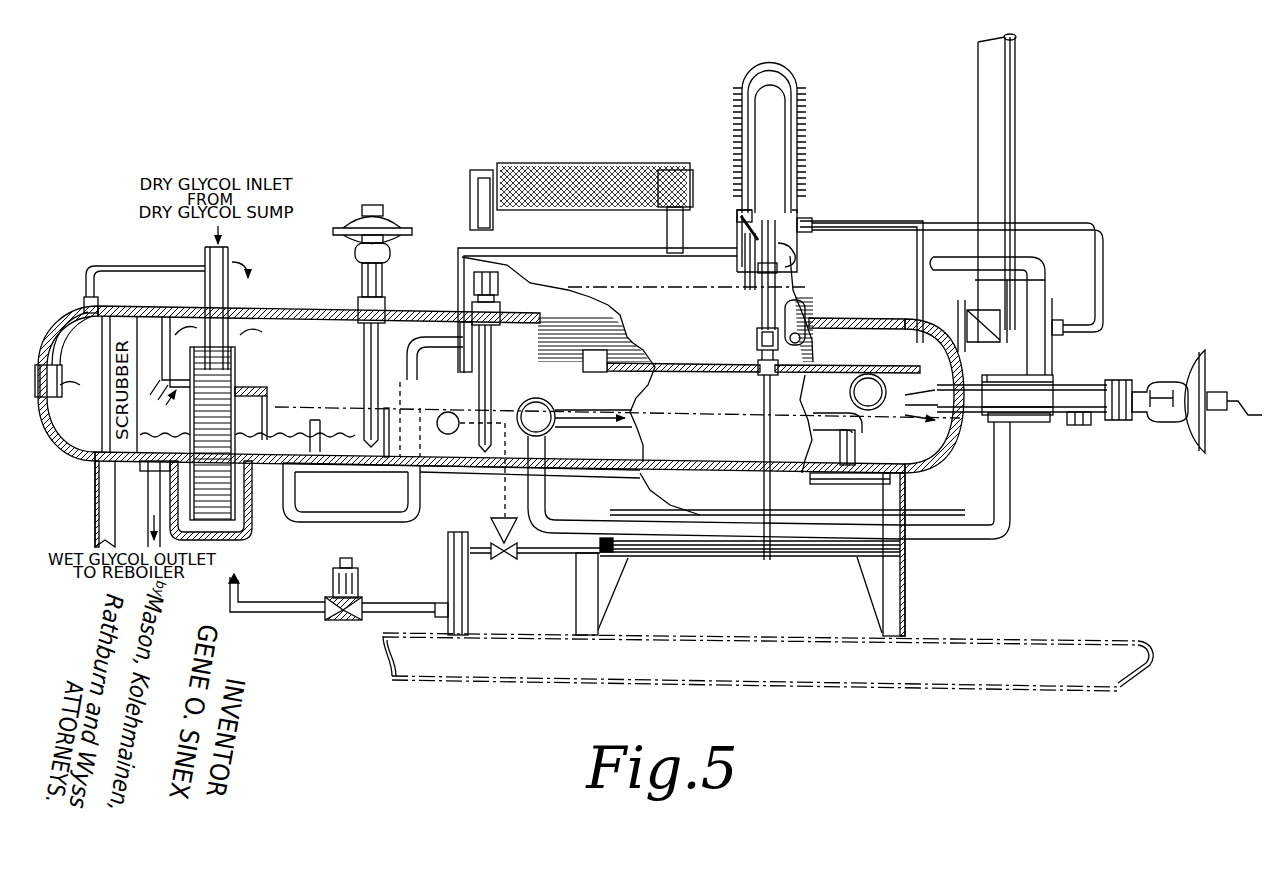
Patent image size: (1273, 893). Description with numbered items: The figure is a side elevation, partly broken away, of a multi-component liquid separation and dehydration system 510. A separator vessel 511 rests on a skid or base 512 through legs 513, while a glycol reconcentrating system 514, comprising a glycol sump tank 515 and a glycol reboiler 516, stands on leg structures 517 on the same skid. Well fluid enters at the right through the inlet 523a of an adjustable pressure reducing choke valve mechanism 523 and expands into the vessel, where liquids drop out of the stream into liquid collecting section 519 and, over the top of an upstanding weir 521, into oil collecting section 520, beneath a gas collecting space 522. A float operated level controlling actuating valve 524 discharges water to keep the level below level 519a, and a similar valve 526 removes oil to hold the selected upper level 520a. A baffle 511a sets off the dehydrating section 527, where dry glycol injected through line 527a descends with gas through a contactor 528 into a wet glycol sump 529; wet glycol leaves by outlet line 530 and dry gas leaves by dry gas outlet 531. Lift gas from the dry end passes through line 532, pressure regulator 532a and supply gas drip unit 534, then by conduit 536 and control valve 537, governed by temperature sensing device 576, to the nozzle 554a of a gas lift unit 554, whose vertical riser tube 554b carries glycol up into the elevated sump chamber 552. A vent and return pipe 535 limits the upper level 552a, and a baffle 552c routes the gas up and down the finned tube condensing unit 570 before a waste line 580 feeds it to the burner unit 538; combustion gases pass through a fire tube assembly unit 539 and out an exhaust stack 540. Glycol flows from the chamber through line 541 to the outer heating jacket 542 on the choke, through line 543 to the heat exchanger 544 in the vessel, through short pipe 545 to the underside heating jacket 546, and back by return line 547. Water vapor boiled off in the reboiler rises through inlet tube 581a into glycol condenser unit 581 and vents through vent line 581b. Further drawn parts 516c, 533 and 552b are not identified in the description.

The multi-component liquid separation and dehydration system 510 is at (783, 708).
The separator vessel 511 is at (322, 306).
The baffle 511a is at (262, 392).
The skid or base 512 is at (692, 636).
The support structures or legs 513 is at (95, 490).
The glycol reconcentrating system 514 is at (793, 556).
The glycol sump tank 515 is at (820, 556).
The glycol reboiler 516 is at (690, 370).
The housing centerline 516c is at (598, 292).
The leg structures 517 is at (612, 587).
The liquid collecting section 519 is at (468, 452).
The level 519a is at (503, 410).
The oil collecting section 520 is at (322, 475).
The selected upper level 520a is at (315, 430).
The upstanding weir 521 is at (392, 420).
The gas collecting space 522 is at (328, 326).
The adjustable pressure reducing choke valve mechanism 523 is at (1140, 390).
The inlet of the choke valve 523a is at (1080, 425).
The float operated level controlling actuating valve 524 is at (472, 308).
The valve 526 is at (360, 300).
The dehydrating section 527 is at (150, 330).
The line 527a is at (205, 254).
The contactor 528 is at (240, 376).
The wet glycol sump 529 is at (250, 542).
The outlet line 530 is at (148, 508).
The dry gas outlet 531 is at (42, 365).
The line 532 is at (110, 265).
The pressure regulator 532a is at (358, 585).
The pipe 533 is at (618, 478).
The supply gas drip unit 534 is at (468, 600).
The pressure equalizing vent and return pipe 535 is at (742, 281).
The conduit 536 is at (668, 556).
The control valve 537 is at (510, 558).
The burner unit 538 is at (1017, 358).
The fire tube assembly unit 539 is at (802, 322).
The exhaust stack 540 is at (1015, 182).
The line 541 is at (1036, 266).
The outer heating jacket 542 is at (1010, 445).
The line 543 is at (960, 541).
The heat exchanger 544 is at (560, 426).
The short pipe 545 is at (856, 446).
The heating jacket 546 is at (822, 485).
The return line 547 is at (325, 522).
The elevated sump chamber 552 is at (803, 216).
The upper level 552a is at (740, 238).
The pivot 552b is at (742, 216).
The baffle 552c is at (812, 243).
The gas lift unit 554 is at (755, 338).
The nozzle 554a is at (762, 348).
The vertical riser tube 554b is at (760, 322).
The air-cooled, externally finned tube condensing unit 570 is at (790, 64).
The temperature sensing device 576 is at (448, 435).
The waste line 580 is at (1103, 272).
The glycol condenser unit 581 is at (606, 164).
The inlet tube 581a is at (658, 234).
The vent line 581b is at (470, 212).